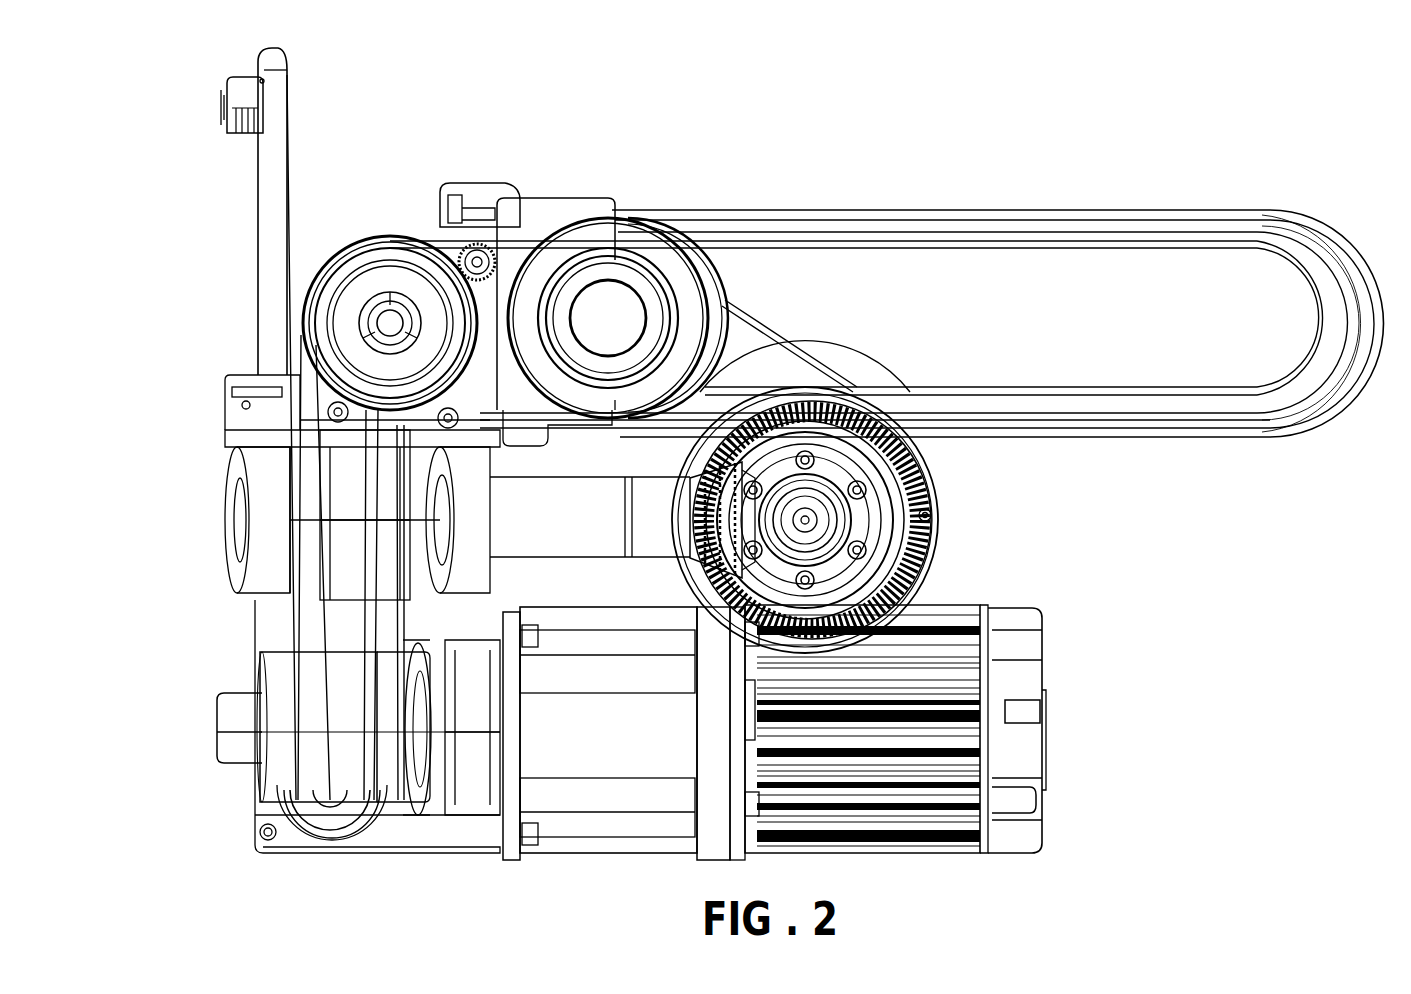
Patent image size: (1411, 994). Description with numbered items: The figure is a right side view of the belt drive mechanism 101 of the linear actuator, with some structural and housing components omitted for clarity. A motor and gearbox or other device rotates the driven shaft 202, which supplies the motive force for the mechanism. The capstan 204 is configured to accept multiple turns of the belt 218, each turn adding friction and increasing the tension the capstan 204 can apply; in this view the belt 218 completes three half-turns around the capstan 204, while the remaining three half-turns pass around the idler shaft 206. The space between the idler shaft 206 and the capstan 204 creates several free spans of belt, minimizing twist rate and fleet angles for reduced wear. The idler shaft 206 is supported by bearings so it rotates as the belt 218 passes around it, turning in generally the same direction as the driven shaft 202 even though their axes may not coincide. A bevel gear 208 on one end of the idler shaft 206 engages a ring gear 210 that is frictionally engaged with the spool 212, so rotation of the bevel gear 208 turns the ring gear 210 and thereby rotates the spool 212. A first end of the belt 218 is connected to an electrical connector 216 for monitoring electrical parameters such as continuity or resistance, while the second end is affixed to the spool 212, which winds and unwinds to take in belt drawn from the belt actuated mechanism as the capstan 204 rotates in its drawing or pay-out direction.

The belt drive mechanism 101 is at (632, 44).
The driven shaft 202 is at (245, 730).
The capstan 204 is at (374, 805).
The idler shaft 206 is at (242, 520).
The bevel gear 208 is at (716, 462).
The ring gear 210 is at (878, 592).
The spool 212 is at (928, 515).
The electrical connector 216 is at (252, 115).
The belt 218 is at (930, 205).